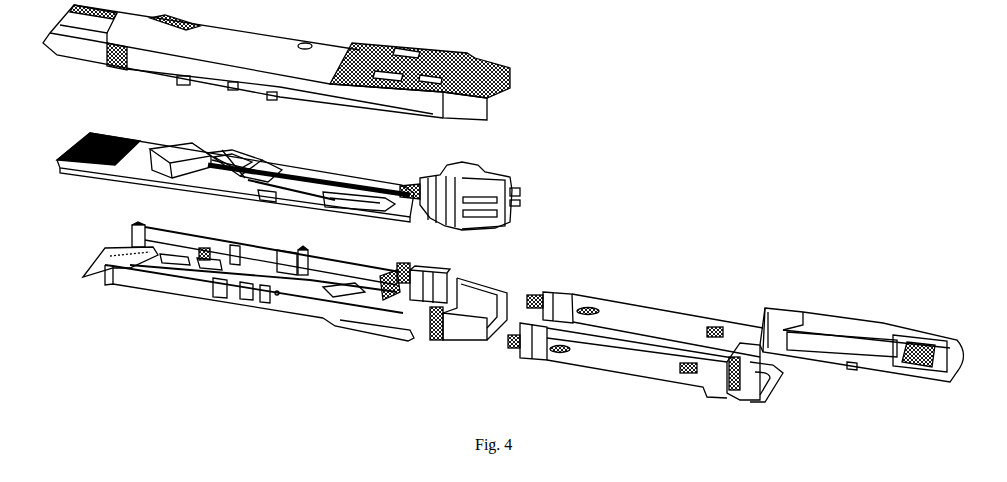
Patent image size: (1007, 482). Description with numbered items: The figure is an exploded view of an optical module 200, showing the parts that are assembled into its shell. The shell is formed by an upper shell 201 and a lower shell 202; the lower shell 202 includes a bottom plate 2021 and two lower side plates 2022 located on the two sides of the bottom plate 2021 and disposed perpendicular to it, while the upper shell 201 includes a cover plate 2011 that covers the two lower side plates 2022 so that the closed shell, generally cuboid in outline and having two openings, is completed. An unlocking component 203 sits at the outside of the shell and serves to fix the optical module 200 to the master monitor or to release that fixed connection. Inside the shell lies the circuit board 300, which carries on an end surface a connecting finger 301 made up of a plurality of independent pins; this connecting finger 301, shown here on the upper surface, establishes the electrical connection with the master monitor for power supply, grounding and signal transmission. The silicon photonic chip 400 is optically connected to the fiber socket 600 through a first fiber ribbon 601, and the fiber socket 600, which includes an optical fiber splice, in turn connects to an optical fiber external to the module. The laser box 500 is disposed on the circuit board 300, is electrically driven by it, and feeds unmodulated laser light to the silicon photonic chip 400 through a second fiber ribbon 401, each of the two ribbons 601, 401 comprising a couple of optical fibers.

The optical module 200 is at (689, 147).
The upper shell 201 is at (227, 56).
The cover plate 2011 is at (341, 14).
The lower shell 202 is at (177, 347).
The bottom plate 2021 is at (90, 290).
The lower side plates 2022 is at (180, 283).
The unlocking component 203 is at (630, 317).
The circuit board 300 is at (147, 157).
The connecting finger 301 is at (82, 132).
The silicon photonic chip 400 is at (243, 160).
The second fiber ribbon 401 is at (268, 196).
The laser box 500 is at (340, 200).
The fiber socket 600 is at (453, 175).
The first fiber ribbon 601 is at (340, 173).